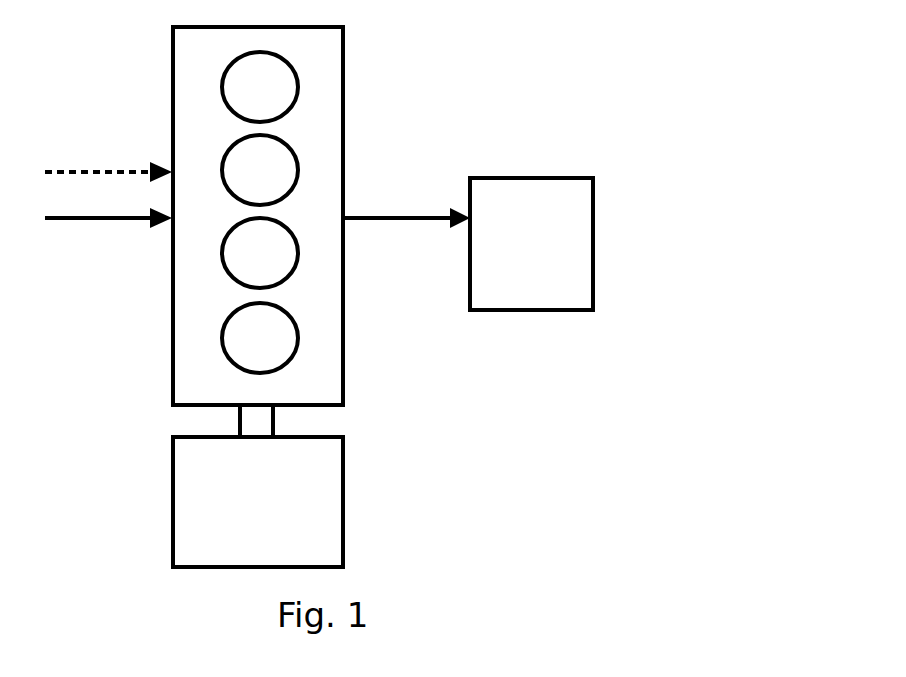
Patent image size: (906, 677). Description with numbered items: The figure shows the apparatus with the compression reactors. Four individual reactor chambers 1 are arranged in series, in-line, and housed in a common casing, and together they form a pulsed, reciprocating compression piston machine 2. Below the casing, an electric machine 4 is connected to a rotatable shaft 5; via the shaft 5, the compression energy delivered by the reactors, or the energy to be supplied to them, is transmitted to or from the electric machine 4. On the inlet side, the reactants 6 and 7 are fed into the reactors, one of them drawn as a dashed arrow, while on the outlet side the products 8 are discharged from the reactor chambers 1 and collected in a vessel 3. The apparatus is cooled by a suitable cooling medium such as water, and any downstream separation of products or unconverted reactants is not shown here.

The reactor chambers 1 is at (257, 338).
The compression piston machine 2 is at (322, 389).
The vessel 3 is at (531, 244).
The electric machine 4 is at (297, 522).
The rotatable shaft 5 is at (270, 423).
The reactant 6 is at (108, 163).
The reactant 7 is at (108, 211).
The products 8 is at (406, 211).